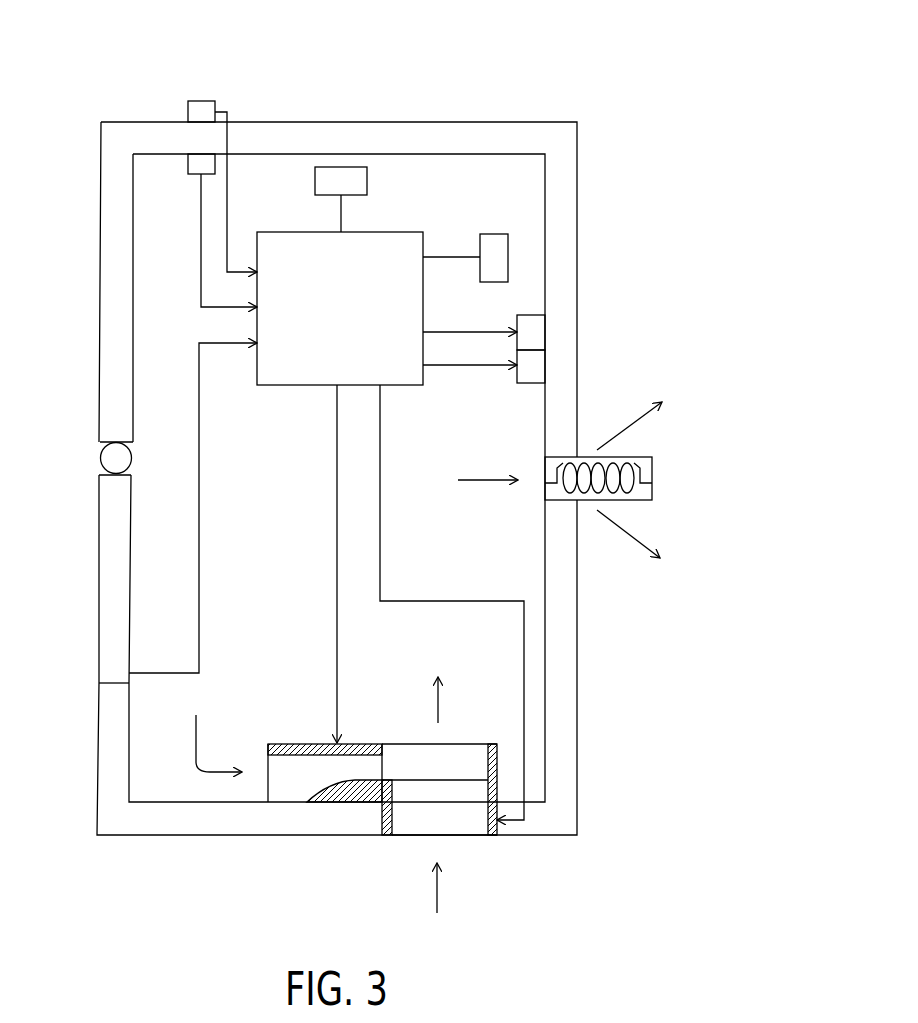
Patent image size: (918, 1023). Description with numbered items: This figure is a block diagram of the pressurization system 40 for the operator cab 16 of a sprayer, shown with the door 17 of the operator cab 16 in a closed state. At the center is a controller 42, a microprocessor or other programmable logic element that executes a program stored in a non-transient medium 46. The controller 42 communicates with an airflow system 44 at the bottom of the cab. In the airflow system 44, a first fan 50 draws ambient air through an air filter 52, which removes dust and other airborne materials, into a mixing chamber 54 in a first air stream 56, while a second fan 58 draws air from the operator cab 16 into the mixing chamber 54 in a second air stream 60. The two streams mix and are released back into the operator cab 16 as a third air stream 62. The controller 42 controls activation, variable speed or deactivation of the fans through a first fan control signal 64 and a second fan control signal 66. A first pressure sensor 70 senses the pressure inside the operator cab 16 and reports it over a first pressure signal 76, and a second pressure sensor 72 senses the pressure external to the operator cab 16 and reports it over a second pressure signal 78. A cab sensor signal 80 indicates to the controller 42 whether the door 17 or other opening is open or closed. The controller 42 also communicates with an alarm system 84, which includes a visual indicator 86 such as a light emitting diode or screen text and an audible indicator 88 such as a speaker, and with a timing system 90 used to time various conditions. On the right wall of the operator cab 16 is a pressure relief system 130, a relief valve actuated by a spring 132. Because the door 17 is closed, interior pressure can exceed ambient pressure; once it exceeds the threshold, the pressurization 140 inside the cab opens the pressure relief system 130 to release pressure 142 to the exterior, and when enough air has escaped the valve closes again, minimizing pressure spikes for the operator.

The operator cab 16 is at (388, 122).
The door 17 is at (100, 582).
The pressurization system 40 is at (618, 93).
The controller 42 is at (357, 322).
The airflow system 44 is at (413, 799).
The non-transient medium 46 is at (367, 185).
The first fan 50 is at (468, 823).
The air filter 52 is at (425, 792).
The mixing chamber 54 is at (420, 763).
The first air stream 56 is at (437, 900).
The second fan 58 is at (293, 783).
The second air stream 60 is at (196, 733).
The third air stream 62 is at (438, 705).
The first fan control signal 64 is at (380, 525).
The second fan control signal 66 is at (337, 498).
The first pressure sensor 70 is at (190, 162).
The second pressure sensor 72 is at (198, 101).
The first pressure signal 76 is at (201, 253).
The second pressure signal 78 is at (227, 225).
The cab sensor signal 80 is at (199, 545).
The alarm system 84 is at (490, 388).
The visual indicator 86 is at (545, 332).
The audible indicator 88 is at (545, 365).
The timing system 90 is at (497, 234).
The pressure relief system 130 is at (591, 468).
The spring 132 is at (618, 500).
The pressurization 140 is at (480, 484).
The pressure 142 is at (628, 430).